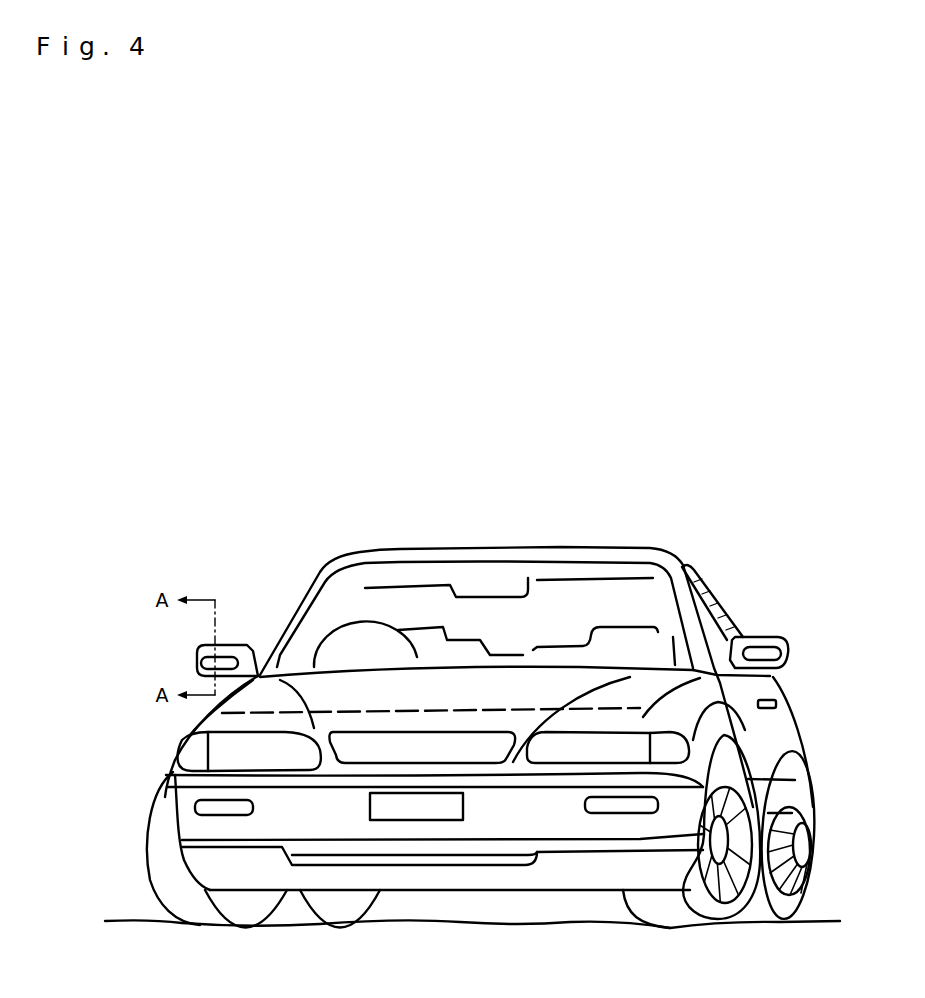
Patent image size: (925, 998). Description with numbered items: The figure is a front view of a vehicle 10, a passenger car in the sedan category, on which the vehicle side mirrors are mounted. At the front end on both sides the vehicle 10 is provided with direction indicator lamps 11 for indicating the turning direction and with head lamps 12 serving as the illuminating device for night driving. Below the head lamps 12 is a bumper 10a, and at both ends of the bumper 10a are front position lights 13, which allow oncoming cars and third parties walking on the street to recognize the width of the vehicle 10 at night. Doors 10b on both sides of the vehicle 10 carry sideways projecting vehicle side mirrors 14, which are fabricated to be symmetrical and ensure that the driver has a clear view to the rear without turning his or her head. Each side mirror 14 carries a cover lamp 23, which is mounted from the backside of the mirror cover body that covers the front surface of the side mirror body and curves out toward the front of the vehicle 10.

The vehicle 10 is at (267, 389).
The bumper 10a is at (416, 835).
The doors 10b is at (773, 770).
The direction indicator lamps 11 is at (197, 748).
The head lamps 12 is at (241, 747).
The front position lights 13 is at (225, 812).
The vehicle side mirrors 14 is at (241, 634).
The cover lamp 23 is at (215, 662).